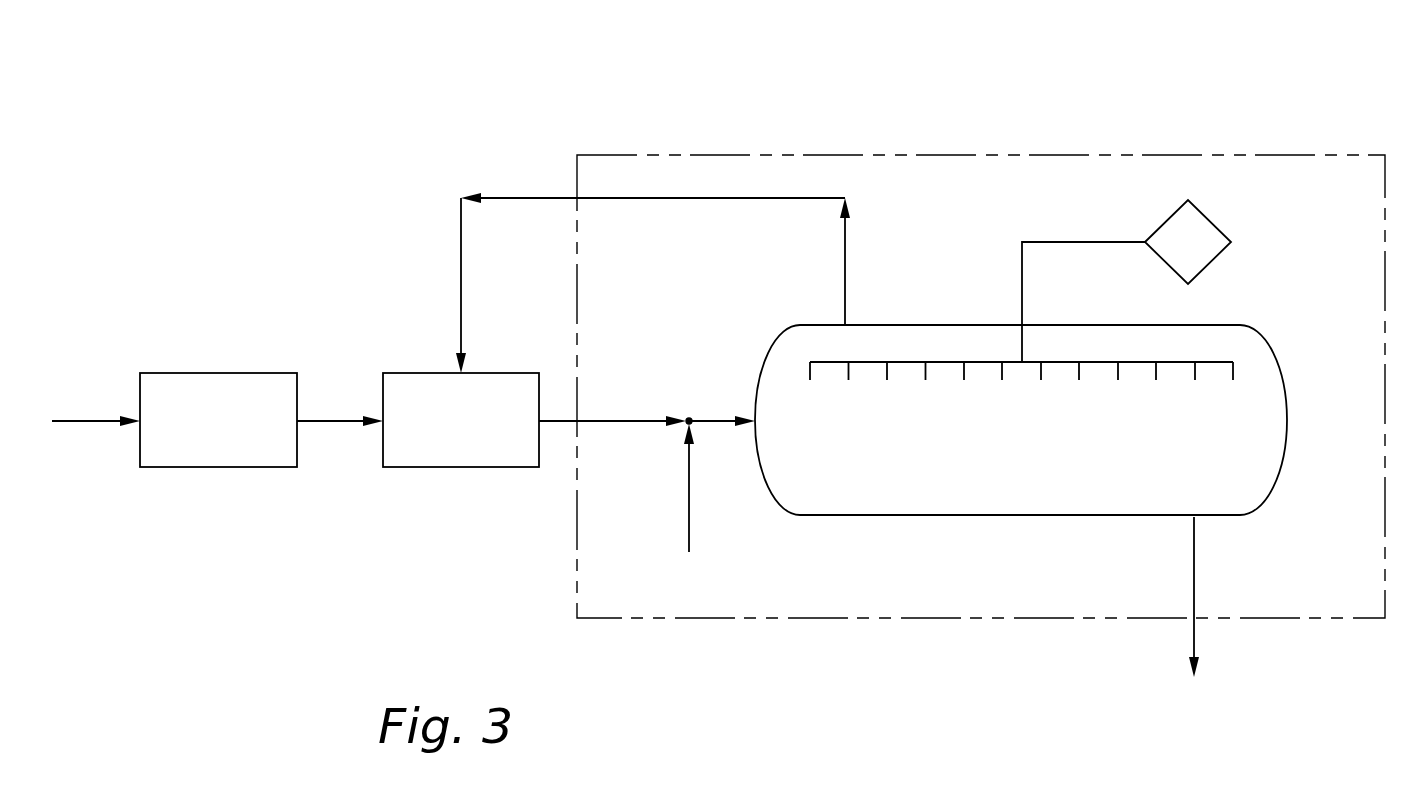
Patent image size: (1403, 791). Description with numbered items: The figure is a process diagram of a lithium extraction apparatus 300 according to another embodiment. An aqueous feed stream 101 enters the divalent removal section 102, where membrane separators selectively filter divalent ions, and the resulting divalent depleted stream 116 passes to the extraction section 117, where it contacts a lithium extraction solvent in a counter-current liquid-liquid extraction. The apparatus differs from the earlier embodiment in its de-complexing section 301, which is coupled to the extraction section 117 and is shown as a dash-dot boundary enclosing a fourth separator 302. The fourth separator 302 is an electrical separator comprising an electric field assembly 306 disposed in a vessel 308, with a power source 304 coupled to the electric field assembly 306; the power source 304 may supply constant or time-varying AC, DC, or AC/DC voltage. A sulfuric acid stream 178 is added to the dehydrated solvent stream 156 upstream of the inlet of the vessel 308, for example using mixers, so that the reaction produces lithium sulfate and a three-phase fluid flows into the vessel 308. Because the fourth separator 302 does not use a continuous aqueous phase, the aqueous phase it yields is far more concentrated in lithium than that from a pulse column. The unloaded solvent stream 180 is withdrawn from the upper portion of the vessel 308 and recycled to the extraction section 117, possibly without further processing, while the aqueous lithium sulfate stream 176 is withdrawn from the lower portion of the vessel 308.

The lithium extraction apparatus 300 is at (196, 87).
The de-complexing section 301 is at (1306, 155).
The aqueous feed stream 101 is at (96, 418).
The divalent removal section 102 is at (240, 432).
The divalent depleted stream 116 is at (341, 418).
The extraction section 117 is at (482, 432).
The unloaded solvent stream 180 is at (522, 195).
The dehydrated solvent stream 156 is at (632, 418).
The sulfuric acid stream 178 is at (689, 521).
The fourth separator 302 is at (1043, 452).
The power source 304 is at (1211, 222).
The electric field assembly 306 is at (808, 370).
The vessel 308 is at (1287, 414).
The aqueous lithium sulfate stream 176 is at (1194, 572).